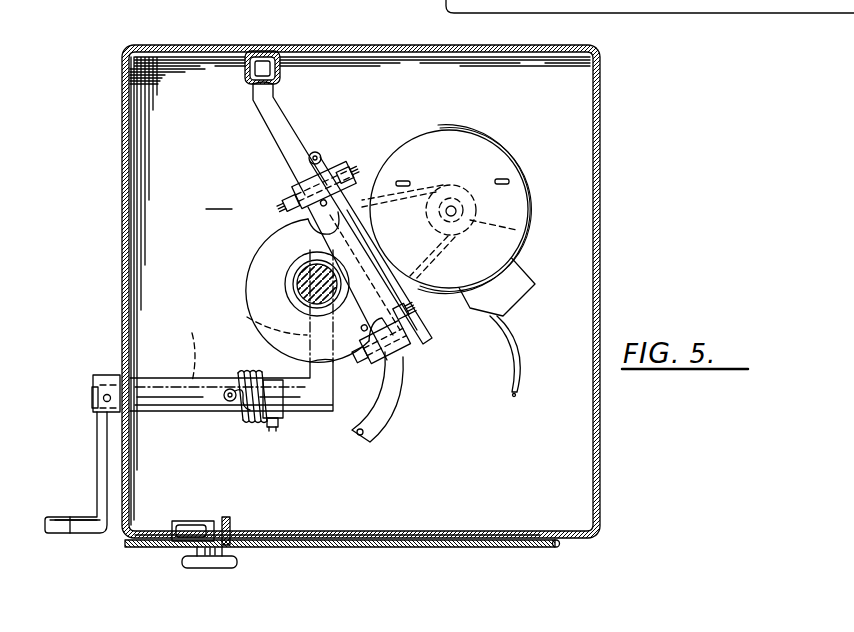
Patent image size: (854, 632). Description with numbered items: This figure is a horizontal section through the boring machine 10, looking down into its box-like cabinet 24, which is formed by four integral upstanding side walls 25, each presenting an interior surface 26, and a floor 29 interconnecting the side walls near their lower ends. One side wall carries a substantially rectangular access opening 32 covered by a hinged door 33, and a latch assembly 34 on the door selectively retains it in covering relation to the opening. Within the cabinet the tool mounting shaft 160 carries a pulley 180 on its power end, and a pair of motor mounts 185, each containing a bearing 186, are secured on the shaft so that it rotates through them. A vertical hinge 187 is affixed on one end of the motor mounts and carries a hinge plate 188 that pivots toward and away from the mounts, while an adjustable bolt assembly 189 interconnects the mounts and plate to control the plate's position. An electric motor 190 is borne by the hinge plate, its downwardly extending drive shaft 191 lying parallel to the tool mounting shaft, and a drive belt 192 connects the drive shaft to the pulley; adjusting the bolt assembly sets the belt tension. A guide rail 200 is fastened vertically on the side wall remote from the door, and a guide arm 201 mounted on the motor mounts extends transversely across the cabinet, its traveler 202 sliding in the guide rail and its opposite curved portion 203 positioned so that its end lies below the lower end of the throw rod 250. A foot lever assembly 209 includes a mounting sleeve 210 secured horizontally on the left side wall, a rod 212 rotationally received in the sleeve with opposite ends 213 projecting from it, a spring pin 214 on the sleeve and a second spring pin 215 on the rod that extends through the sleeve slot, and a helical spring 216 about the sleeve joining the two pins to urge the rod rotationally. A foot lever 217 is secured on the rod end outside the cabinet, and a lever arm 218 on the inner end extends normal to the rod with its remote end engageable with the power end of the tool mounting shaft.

The boring machine 10 is at (618, 205).
The cabinet 24 is at (615, 270).
The side walls 25 is at (386, 46).
The interior surface 26 is at (598, 153).
The floor 29 is at (219, 196).
The access opening 32 is at (530, 535).
The door 33 is at (372, 540).
The latch assembly 34 is at (182, 561).
The tool mounting shaft 160 is at (310, 278).
The pulley 180 is at (282, 236).
The motor mounts 185 is at (290, 272).
The bearing 186 is at (300, 285).
The vertical hinge 187 is at (318, 152).
The hinge plate 188 is at (378, 194).
The adjustable bolt assembly 189 is at (402, 342).
The electric motor 190 is at (488, 165).
The drive shaft 191 is at (526, 228).
The drive belt 192 is at (400, 305).
The guide rail 200 is at (283, 66).
The guide arm 201 is at (273, 126).
The traveler 202 is at (263, 62).
The curved portion 203 is at (397, 400).
The foot lever assembly 209 is at (94, 365).
The mounting sleeve 210 is at (184, 390).
The rod 212 is at (176, 349).
The opposite ends 213 is at (306, 418).
The spring pin 214 is at (227, 401).
The second spring pin 215 is at (270, 432).
The spring 216 is at (246, 373).
The foot lever 217 is at (72, 516).
The lever arm 218 is at (258, 316).
The throw rod 250 is at (364, 434).